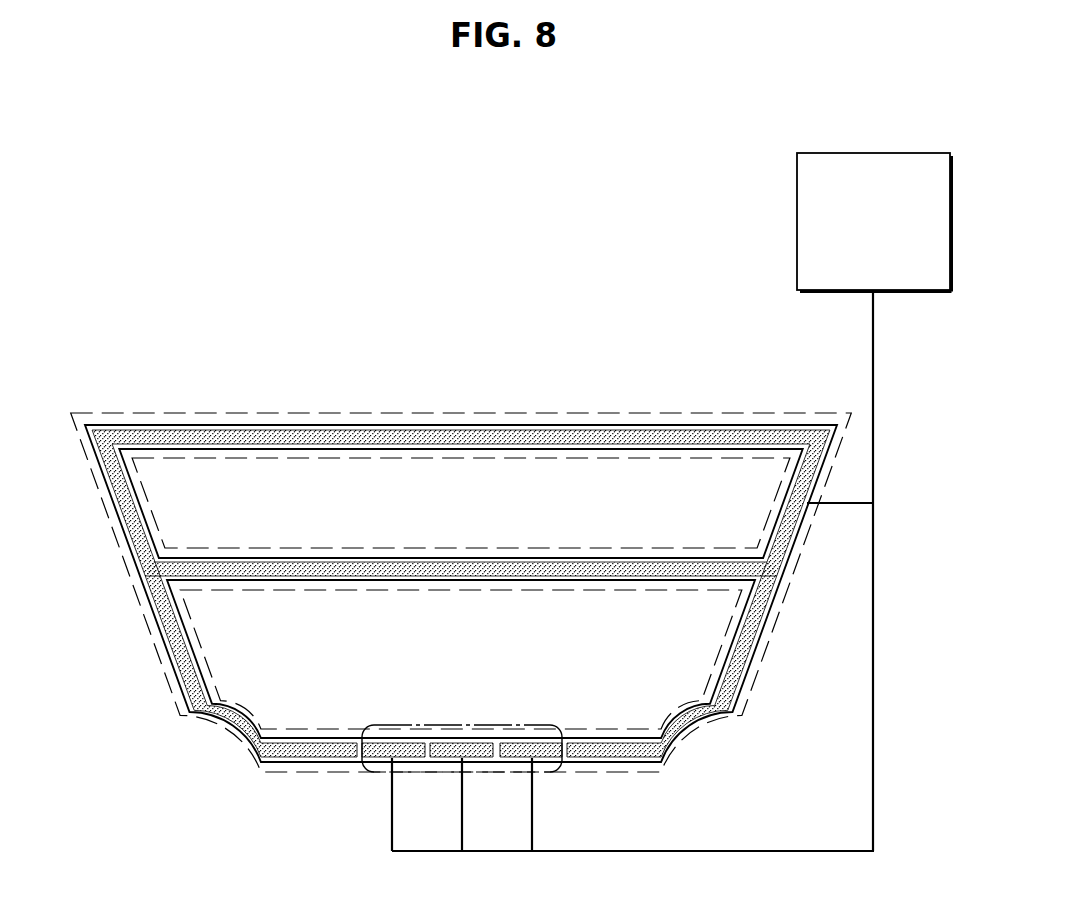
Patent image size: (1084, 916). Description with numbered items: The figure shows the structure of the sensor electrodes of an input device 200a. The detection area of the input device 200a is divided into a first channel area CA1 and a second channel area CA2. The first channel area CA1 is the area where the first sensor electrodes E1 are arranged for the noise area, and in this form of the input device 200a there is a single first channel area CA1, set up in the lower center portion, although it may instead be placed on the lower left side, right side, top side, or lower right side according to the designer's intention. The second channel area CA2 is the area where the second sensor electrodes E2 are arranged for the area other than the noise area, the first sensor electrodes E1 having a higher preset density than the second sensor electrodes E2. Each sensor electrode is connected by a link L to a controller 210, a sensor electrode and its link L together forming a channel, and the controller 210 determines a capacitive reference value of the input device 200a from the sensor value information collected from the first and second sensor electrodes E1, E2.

The input device 200a is at (461, 563).
The second sensor electrodes E2 is at (547, 437).
The first sensor electrodes E1 is at (555, 759).
The first channel area CA1 is at (503, 773).
The second channel area CA2 is at (275, 773).
The controller 210 is at (923, 153).
The link L is at (648, 852).